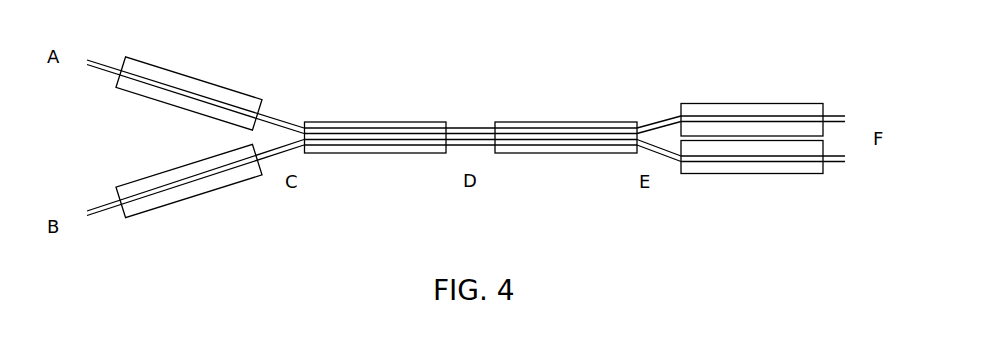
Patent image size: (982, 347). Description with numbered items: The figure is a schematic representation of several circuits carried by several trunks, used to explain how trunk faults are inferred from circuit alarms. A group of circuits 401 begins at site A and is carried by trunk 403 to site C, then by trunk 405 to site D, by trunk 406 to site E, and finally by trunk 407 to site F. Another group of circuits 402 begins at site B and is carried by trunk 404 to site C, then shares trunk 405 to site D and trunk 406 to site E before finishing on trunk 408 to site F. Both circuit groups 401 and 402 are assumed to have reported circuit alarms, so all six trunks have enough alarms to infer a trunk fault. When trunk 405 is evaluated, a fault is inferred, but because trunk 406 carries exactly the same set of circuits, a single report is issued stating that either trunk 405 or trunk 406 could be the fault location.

The group of circuits 401 is at (99, 59).
The group of circuits 402 is at (98, 216).
The trunk 403 is at (222, 84).
The trunk 404 is at (202, 196).
The trunk 405 is at (331, 120).
The trunk 406 is at (521, 121).
The trunk 407 is at (711, 103).
The trunk 408 is at (710, 174).